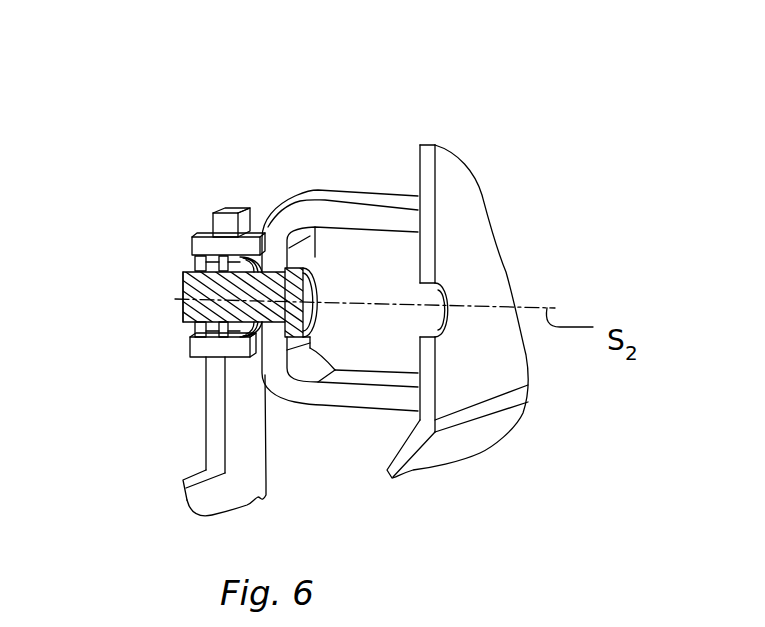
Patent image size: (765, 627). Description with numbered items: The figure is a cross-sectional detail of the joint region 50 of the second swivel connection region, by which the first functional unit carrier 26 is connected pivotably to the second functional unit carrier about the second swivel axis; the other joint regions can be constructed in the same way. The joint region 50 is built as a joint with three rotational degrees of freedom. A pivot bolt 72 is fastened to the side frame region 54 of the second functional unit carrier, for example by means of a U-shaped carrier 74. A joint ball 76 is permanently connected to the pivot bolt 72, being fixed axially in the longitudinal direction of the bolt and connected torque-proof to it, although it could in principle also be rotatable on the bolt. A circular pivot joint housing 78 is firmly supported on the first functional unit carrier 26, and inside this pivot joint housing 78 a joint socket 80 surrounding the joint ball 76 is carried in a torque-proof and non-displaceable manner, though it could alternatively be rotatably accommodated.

The first functional unit carrier 26 is at (258, 498).
The joint region 50 is at (186, 166).
The side frame region 54 is at (505, 273).
The pivot bolt 72 is at (183, 308).
The yoke 74 is at (338, 191).
The joint ball 76 is at (183, 287).
The pivot joint housing 78 is at (197, 237).
The joint socket 80 is at (197, 267).